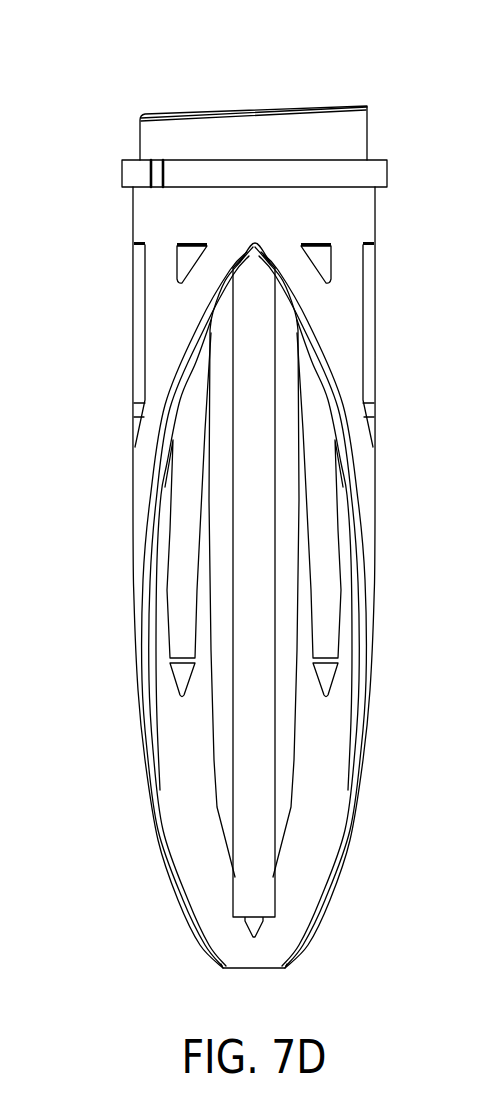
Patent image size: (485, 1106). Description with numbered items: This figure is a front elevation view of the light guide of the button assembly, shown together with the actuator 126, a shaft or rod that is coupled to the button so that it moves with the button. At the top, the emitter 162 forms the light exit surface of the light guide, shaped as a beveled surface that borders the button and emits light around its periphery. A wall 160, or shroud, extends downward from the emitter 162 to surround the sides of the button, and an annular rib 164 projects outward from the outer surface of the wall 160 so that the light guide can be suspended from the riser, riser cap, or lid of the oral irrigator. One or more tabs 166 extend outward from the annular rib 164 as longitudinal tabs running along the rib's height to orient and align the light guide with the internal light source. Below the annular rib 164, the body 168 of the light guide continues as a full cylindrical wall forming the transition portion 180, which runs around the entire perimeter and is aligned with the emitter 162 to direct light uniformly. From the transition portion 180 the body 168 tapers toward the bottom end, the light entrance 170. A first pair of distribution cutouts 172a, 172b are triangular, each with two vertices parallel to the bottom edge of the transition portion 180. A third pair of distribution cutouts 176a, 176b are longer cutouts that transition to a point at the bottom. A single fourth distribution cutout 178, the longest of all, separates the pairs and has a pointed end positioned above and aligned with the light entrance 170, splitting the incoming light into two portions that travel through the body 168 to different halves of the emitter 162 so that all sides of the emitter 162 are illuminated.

The actuator 126 is at (250, 890).
The wall 160 is at (258, 134).
The emitter 162 is at (148, 113).
The annular rib 164 is at (377, 159).
The tabs 166 is at (150, 175).
The body 168 is at (322, 797).
The light entrance 170 is at (255, 970).
The first distribution cutout 172a is at (175, 250).
The first distribution cutout 172b is at (330, 250).
The third distribution cutout 176a is at (183, 565).
The third distribution cutout 176b is at (326, 607).
The fourth distribution cutout 178 is at (224, 775).
The transition portion 180 is at (270, 213).